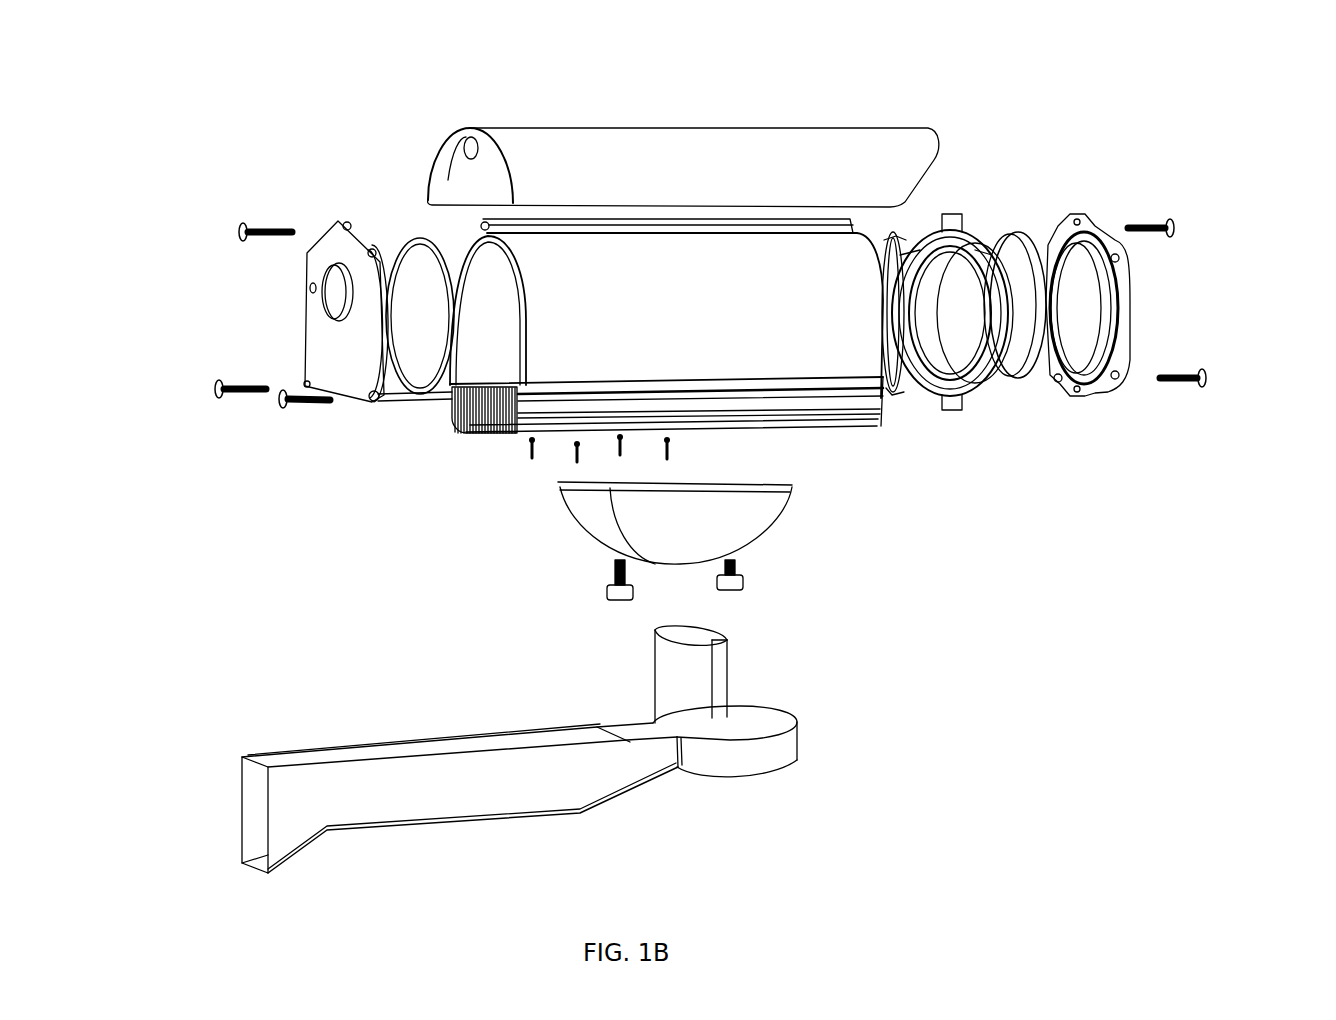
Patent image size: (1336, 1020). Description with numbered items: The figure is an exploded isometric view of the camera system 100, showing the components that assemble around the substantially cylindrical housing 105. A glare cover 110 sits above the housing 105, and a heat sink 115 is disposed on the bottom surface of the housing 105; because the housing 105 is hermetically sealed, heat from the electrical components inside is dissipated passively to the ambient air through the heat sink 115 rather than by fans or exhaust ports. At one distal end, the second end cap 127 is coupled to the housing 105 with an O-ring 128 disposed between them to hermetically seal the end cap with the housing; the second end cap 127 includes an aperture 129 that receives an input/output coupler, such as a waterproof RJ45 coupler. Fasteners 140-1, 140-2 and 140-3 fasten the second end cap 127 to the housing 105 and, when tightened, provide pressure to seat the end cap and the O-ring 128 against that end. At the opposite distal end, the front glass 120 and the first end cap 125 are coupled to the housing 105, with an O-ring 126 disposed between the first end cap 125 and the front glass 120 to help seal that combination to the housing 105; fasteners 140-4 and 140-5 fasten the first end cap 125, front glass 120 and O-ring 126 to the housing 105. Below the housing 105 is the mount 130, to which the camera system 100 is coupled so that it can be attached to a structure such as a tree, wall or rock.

The camera system 100 is at (258, 151).
The housing 105 is at (757, 338).
The glare cover 110 is at (573, 152).
The heat sink 115 is at (563, 418).
The front glass 120 is at (1023, 344).
The first end cap 125 is at (1120, 323).
The O-ring 126 is at (1073, 252).
The second end cap 127 is at (318, 342).
The O-ring 128 is at (410, 238).
The aperture 129 is at (328, 280).
The mount 130 is at (198, 755).
The fastener 140-1 is at (222, 390).
The fastener 140-2 is at (282, 406).
The fastener 140-3 is at (238, 232).
The fastener 140-4 is at (1176, 228).
The fastener 140-5 is at (1208, 378).